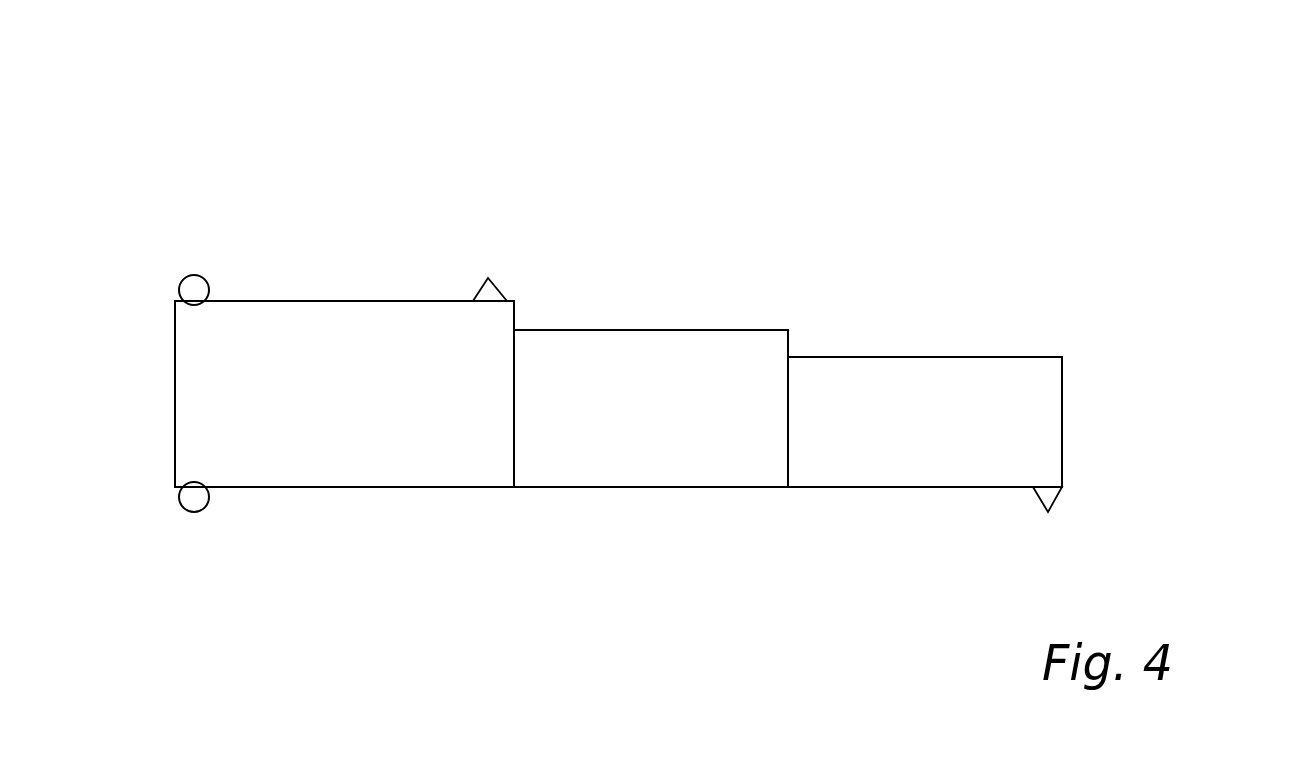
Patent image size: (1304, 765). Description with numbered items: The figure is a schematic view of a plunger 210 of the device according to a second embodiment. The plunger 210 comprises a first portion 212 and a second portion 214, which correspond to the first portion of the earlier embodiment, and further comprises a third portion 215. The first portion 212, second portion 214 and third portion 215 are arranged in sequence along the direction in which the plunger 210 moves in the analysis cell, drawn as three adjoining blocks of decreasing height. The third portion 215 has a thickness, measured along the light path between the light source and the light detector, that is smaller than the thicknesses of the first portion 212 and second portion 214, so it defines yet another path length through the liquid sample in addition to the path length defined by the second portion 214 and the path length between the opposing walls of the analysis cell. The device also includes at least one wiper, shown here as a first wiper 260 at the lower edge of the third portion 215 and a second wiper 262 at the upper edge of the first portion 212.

The plunger 210 is at (1112, 208).
The first portion 212 is at (328, 308).
The second portion 214 is at (690, 340).
The third portion 215 is at (907, 387).
The second wiper 262 is at (487, 277).
The first wiper 260 is at (1049, 511).